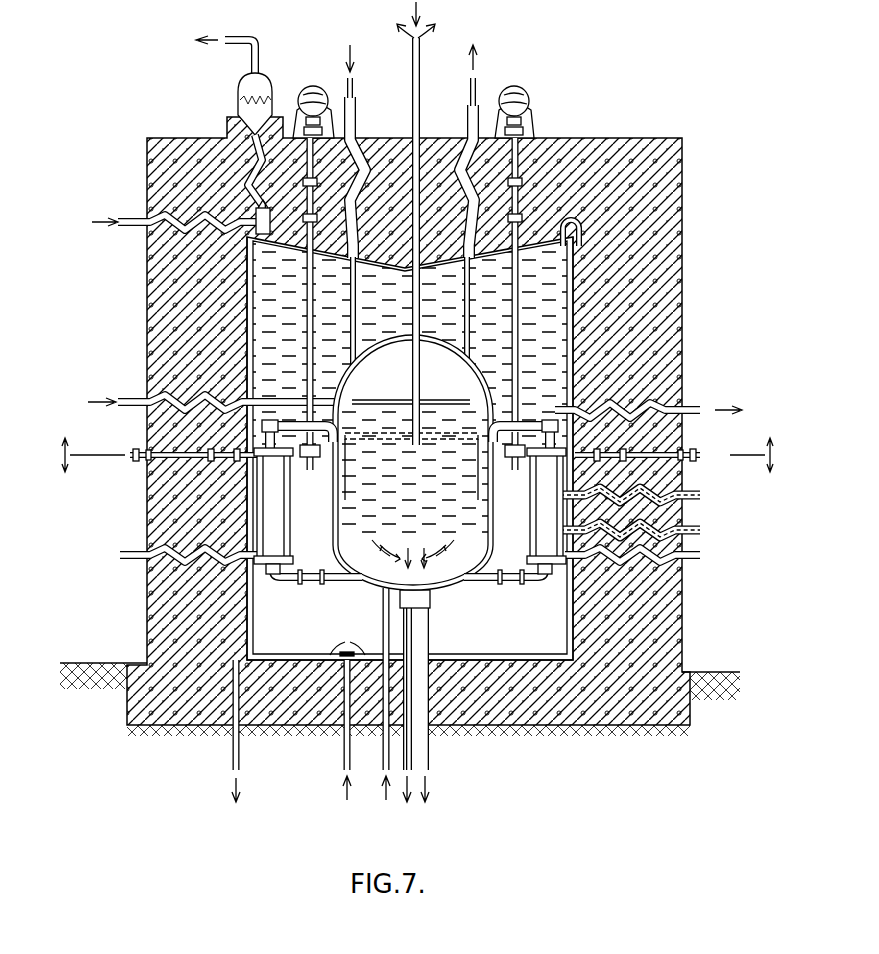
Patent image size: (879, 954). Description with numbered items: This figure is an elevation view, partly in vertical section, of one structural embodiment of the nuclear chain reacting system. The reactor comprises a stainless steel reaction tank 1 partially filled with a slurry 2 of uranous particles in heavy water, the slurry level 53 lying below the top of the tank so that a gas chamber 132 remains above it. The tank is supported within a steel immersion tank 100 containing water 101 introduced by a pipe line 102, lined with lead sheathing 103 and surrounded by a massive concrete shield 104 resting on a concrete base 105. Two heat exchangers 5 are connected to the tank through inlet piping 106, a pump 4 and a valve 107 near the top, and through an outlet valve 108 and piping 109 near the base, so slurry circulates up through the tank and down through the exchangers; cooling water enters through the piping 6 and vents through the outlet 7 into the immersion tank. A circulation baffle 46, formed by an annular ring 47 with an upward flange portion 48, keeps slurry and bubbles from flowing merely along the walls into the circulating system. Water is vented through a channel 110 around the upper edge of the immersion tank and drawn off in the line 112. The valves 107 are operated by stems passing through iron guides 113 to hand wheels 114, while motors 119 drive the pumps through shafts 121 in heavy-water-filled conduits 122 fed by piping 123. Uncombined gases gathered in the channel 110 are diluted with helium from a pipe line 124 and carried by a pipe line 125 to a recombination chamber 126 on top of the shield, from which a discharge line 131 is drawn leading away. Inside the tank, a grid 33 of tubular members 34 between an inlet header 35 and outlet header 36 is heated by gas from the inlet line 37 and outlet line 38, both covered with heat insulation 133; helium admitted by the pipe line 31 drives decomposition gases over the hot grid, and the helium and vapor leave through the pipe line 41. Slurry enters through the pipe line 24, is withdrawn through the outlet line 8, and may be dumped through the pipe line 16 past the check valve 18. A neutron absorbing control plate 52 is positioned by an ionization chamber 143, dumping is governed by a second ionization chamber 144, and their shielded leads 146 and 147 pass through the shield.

The reaction tank 1 is at (335, 515).
The slurry 2 is at (345, 530).
The pump 4 is at (296, 424).
The heat exchanger 5 is at (292, 504).
The inlet 6 is at (135, 565).
The outlet 7 is at (282, 470).
The outlet line 8 is at (447, 750).
The pipe line 16 is at (412, 648).
The check valve 18 is at (430, 598).
The pipe line 24 is at (384, 618).
The pipe line 31 is at (185, 400).
The grid 33 is at (368, 400).
The tubular members 34 is at (450, 406).
The inlet header 35 is at (356, 386).
The outlet header 36 is at (462, 378).
The inlet line 37 is at (358, 372).
The outlet line 38 is at (470, 86).
The pipe line 41 is at (680, 400).
The circulation baffle 46 is at (375, 472).
The annular ring 47 is at (470, 474).
The annular flange portion 48 is at (470, 452).
The control plate 52 is at (370, 452).
The operating level 53 is at (440, 412).
The immersion tank 100 is at (252, 618).
The water 101 is at (262, 306).
The pipe line 102 is at (345, 748).
The lead sheathing 103 is at (250, 636).
The concrete shield 104 is at (175, 300).
The concrete base 105 is at (545, 727).
The inlet piping 106 is at (264, 422).
The valve 107 is at (411, 454).
The outlet valve 108 is at (338, 584).
The piping 109 is at (280, 582).
The channel 110 is at (594, 226).
The line 112 is at (260, 250).
The guides 113 is at (150, 406).
The hand wheels 114 is at (130, 460).
The motors 119 is at (316, 88).
The shafts 121 is at (306, 116).
The conduits 122 is at (306, 374).
The piping 123 is at (322, 128).
The pipe line 124 is at (135, 232).
The pipe line 125 is at (248, 170).
The recombination chamber 126 is at (230, 110).
The vent pipe 131 is at (262, 55).
The gas chamber 132 is at (418, 352).
The heat insulation 133 is at (467, 118).
The ionization chamber 143 is at (421, 529).
The ionization chamber 144 is at (478, 536).
The shielded lead 146 is at (630, 485).
The shielded lead 147 is at (630, 521).